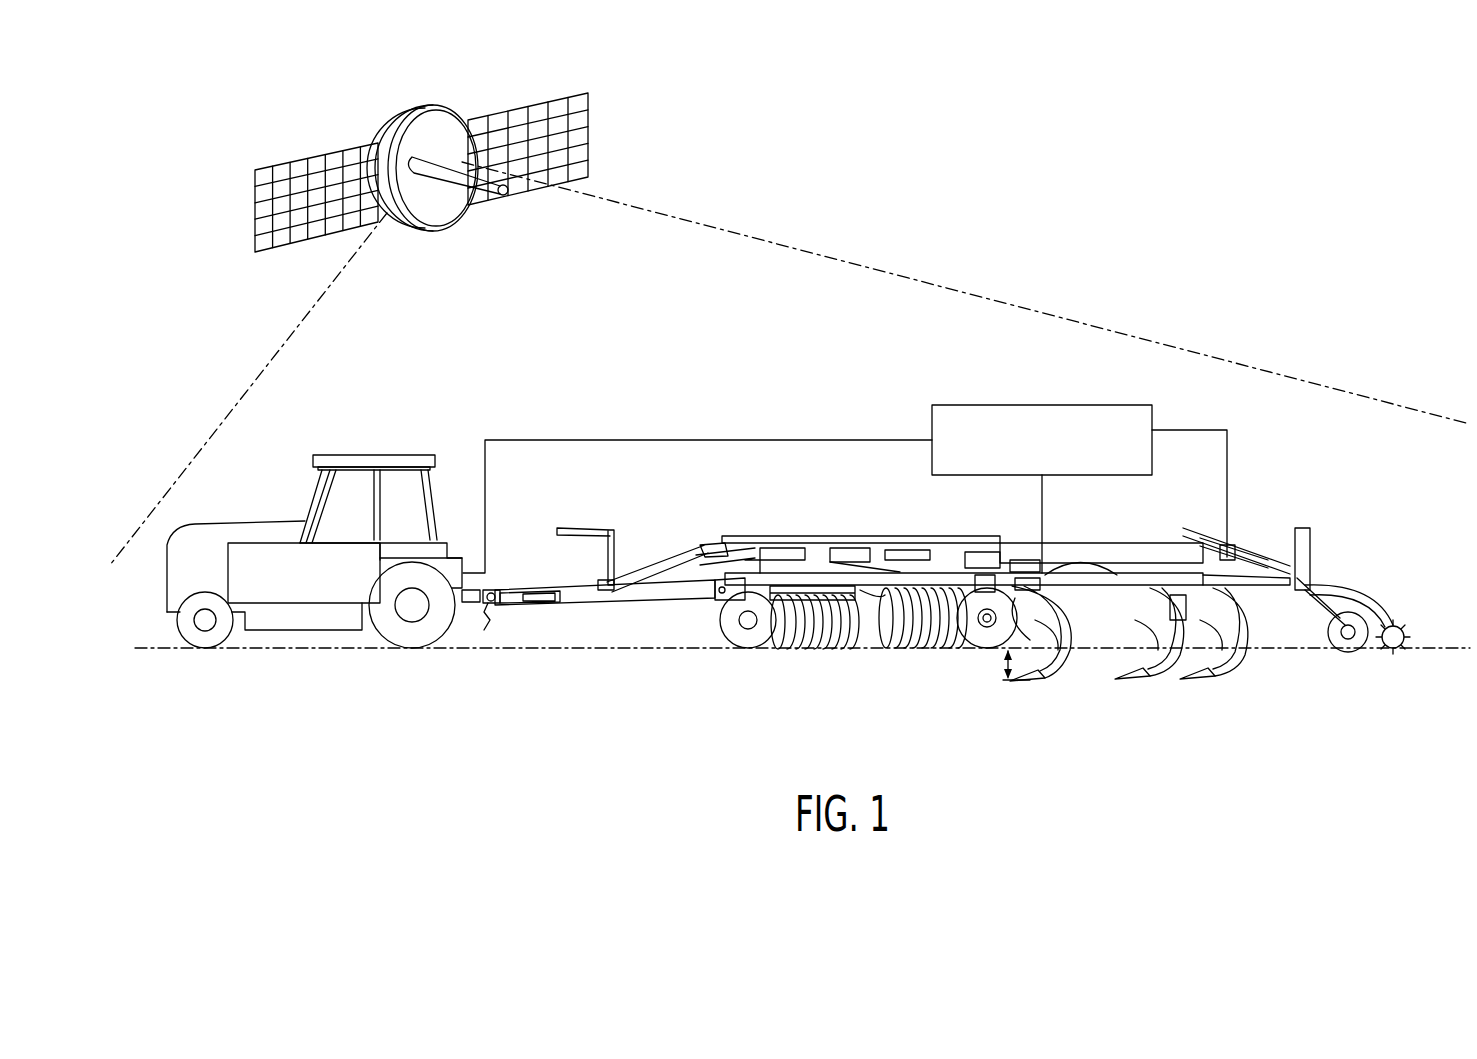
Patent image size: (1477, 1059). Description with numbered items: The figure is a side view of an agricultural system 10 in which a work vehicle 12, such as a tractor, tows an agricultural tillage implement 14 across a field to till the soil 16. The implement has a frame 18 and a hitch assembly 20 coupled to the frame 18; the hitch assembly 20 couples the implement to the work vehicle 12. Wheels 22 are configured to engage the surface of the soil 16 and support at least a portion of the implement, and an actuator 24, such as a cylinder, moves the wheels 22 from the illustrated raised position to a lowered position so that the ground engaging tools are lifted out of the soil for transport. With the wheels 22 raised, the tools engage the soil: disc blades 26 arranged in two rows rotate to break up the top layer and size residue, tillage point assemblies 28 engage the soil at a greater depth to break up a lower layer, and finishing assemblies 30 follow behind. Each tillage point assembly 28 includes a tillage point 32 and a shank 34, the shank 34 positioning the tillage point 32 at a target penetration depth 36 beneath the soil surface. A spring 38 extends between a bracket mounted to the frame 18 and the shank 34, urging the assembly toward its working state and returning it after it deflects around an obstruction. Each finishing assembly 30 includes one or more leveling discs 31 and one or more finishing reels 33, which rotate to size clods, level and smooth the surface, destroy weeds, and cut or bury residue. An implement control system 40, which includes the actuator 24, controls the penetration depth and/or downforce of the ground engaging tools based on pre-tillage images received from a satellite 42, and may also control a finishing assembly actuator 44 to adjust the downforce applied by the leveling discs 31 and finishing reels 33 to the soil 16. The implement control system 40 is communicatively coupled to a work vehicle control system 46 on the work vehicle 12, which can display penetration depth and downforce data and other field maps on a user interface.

The agricultural system 10 is at (835, 409).
The work vehicle 12 is at (333, 519).
The agricultural tillage implement 14 is at (744, 520).
The soil 16 is at (557, 648).
The frame 18 is at (1117, 580).
The hitch assembly 20 is at (633, 597).
The wheels 22 is at (1091, 570).
The actuator 24 is at (1022, 580).
The disc blades 26 is at (788, 659).
The tillage point assemblies 28 is at (1029, 687).
The finishing assemblies 30 is at (1362, 662).
The leveling discs 31 is at (1347, 658).
The tillage point 32 is at (1140, 688).
The finishing reels 33 is at (1404, 664).
The shank 34 is at (1066, 672).
The target penetration depth 36 is at (1005, 665).
The spring 38 is at (1005, 632).
The implement control system 40 is at (1153, 413).
The satellite 42 is at (433, 232).
The finishing assembly actuator 44 is at (1240, 558).
The work vehicle control system 46 is at (228, 572).